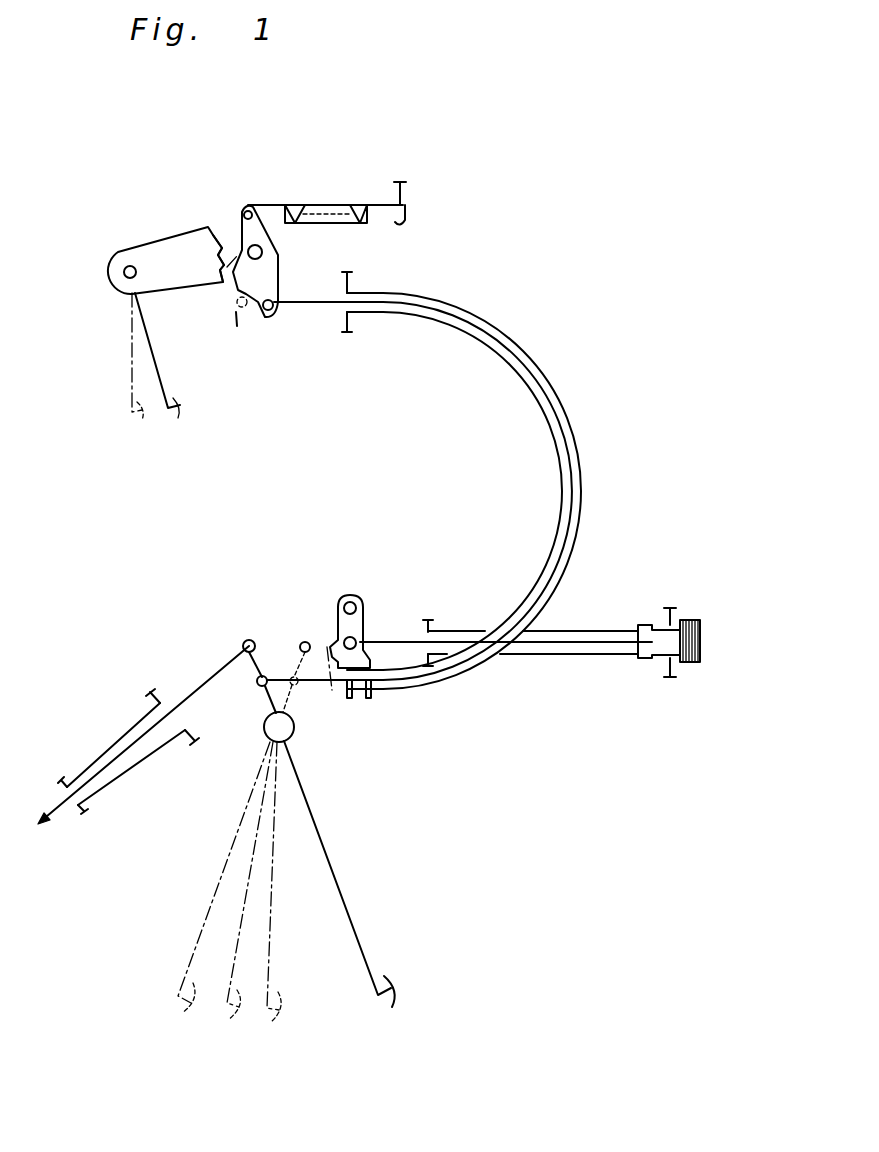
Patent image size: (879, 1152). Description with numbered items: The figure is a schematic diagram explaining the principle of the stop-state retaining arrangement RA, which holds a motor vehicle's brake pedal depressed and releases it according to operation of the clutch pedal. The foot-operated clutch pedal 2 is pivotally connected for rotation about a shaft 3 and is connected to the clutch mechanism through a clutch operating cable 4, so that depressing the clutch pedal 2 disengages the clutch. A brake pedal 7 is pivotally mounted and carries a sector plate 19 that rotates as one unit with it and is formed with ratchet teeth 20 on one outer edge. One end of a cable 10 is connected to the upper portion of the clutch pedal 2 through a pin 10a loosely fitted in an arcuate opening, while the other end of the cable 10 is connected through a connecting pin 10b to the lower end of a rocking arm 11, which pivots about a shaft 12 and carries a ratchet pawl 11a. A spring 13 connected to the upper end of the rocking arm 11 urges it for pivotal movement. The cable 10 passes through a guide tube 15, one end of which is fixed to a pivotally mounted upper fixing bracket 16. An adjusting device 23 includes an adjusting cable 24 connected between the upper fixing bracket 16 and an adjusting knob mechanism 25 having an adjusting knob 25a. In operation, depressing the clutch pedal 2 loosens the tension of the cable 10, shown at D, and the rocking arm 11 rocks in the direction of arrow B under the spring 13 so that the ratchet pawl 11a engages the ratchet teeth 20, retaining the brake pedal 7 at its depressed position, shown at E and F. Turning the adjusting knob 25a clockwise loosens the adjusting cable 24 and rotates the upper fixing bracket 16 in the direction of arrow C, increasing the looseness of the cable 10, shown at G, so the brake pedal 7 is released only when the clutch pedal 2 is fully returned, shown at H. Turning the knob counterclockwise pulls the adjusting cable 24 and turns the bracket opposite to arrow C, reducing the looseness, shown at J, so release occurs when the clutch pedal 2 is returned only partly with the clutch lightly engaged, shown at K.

The clutch pedal 2 is at (340, 886).
The shaft 3 is at (255, 752).
The clutch operating cable 4 is at (206, 679).
The brake pedal 7 is at (160, 372).
The cable 10 is at (548, 400).
The pin 10a is at (257, 685).
The connecting pin 10b is at (272, 318).
The rocking arm 11 is at (278, 257).
The ratchet pawl 11a is at (236, 276).
The shaft 12 is at (276, 272).
The spring 13 is at (336, 204).
The guide tube 15 is at (574, 451).
The upper fixing bracket 16 is at (363, 596).
The sector plate 19 is at (167, 250).
The ratchet teeth 20 is at (211, 228).
The adjusting device 23 is at (455, 627).
The adjusting cable 24 is at (583, 645).
The adjusting knob mechanism 25 is at (655, 609).
The adjusting knob 25a is at (701, 646).
The stop-state retaining arrangement RA is at (553, 328).
The arrow B is at (300, 378).
The arrow C is at (331, 729).
The loosened cable tension state D is at (217, 878).
The brake pedal retained state E is at (232, 320).
The brake pedal retained position F is at (127, 365).
The increased cable looseness state G is at (332, 633).
The fully returned clutch pedal position H is at (272, 914).
The reduced cable looseness state J is at (371, 644).
The partially returned clutch pedal position K is at (241, 909).